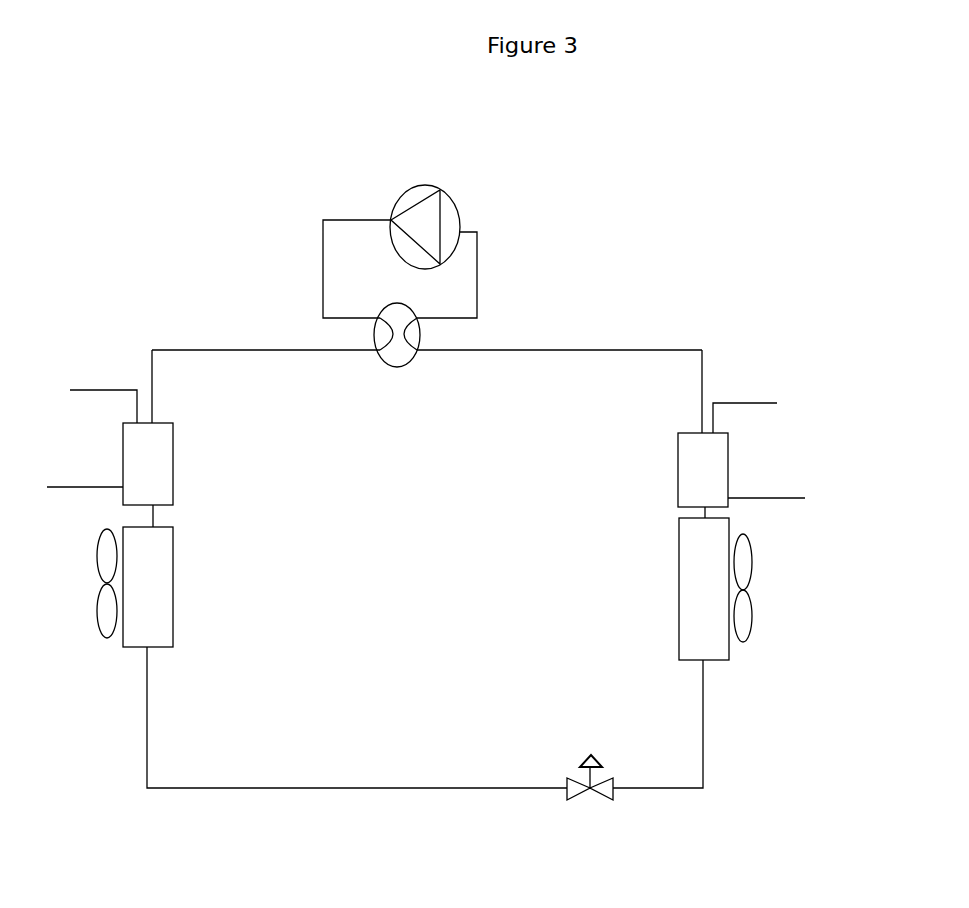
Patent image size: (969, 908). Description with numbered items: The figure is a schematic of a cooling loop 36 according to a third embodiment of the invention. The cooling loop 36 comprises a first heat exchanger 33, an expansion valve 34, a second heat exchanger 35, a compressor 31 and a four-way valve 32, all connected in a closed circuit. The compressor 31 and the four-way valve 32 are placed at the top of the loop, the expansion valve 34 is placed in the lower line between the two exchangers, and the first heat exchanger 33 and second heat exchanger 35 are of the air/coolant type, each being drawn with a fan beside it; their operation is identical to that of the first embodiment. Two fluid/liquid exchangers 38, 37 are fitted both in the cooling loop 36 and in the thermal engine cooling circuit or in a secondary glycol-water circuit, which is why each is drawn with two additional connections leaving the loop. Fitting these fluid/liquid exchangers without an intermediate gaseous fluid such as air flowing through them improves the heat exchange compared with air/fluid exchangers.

The compressor 31 is at (467, 208).
The four-way valve 32 is at (407, 373).
The first heat exchanger 33 is at (178, 643).
The expansion valve 34 is at (612, 805).
The second heat exchanger 35 is at (725, 670).
The cooling loop 36 is at (608, 340).
The fluid/liquid exchanger 37 is at (732, 477).
The fluid/liquid exchanger 38 is at (177, 492).